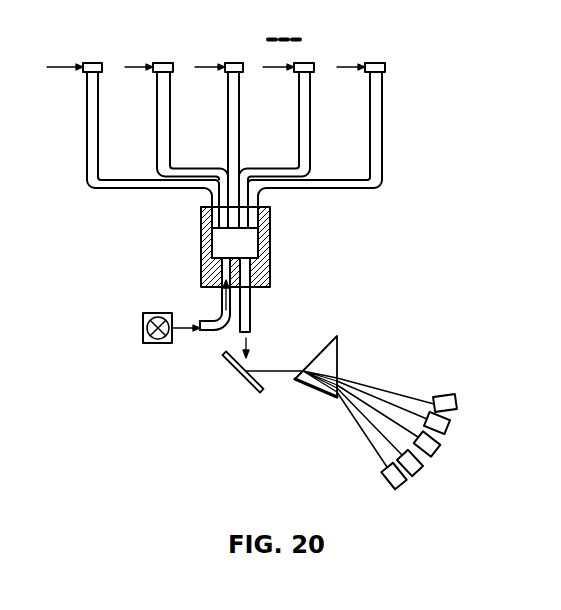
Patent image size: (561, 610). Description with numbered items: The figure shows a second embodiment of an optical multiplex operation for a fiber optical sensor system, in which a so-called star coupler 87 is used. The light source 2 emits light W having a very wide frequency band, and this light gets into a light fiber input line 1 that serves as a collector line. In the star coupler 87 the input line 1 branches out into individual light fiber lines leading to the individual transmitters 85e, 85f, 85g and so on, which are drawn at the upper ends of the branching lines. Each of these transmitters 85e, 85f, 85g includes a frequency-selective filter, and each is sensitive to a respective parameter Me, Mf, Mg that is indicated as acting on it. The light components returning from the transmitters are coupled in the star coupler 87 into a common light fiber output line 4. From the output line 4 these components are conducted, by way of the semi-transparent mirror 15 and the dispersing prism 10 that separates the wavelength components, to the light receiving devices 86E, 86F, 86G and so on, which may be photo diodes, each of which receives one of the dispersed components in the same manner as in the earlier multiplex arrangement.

The transmitter 85e is at (90, 62).
The transmitter 85f is at (163, 62).
The transmitter 85g is at (234, 62).
The star coupler 87 is at (270, 236).
The light W is at (220, 312).
The light fiber input line 1 is at (213, 316).
The common light fiber output line 4 is at (250, 311).
The light source 2 is at (143, 315).
The semi-transparent mirror 15 is at (240, 374).
The dispersing prism 10 is at (333, 352).
The light receiving device 86E is at (403, 485).
The light receiving device 86F is at (420, 470).
The light receiving device 86G is at (440, 449).
The parameter Me is at (65, 79).
The parameter Mf is at (139, 79).
The parameter Mg is at (210, 79).